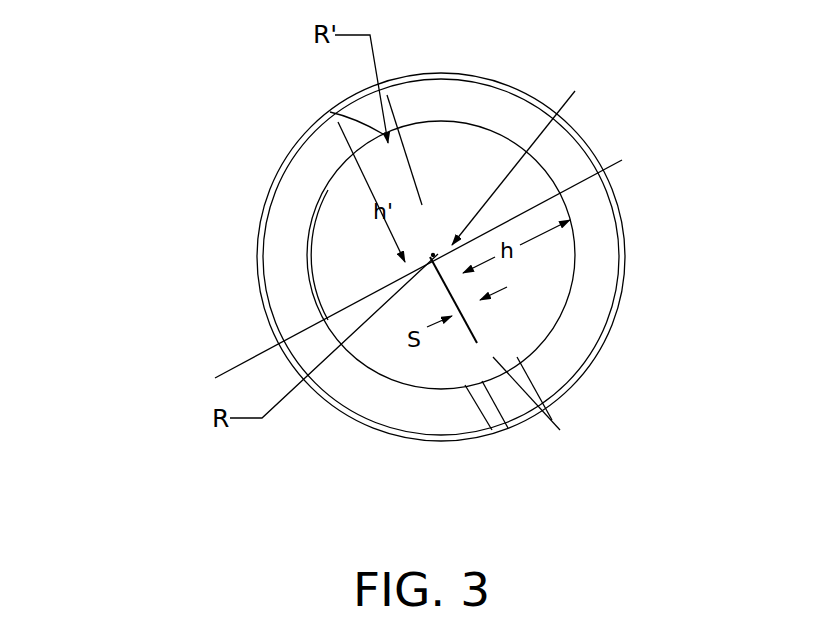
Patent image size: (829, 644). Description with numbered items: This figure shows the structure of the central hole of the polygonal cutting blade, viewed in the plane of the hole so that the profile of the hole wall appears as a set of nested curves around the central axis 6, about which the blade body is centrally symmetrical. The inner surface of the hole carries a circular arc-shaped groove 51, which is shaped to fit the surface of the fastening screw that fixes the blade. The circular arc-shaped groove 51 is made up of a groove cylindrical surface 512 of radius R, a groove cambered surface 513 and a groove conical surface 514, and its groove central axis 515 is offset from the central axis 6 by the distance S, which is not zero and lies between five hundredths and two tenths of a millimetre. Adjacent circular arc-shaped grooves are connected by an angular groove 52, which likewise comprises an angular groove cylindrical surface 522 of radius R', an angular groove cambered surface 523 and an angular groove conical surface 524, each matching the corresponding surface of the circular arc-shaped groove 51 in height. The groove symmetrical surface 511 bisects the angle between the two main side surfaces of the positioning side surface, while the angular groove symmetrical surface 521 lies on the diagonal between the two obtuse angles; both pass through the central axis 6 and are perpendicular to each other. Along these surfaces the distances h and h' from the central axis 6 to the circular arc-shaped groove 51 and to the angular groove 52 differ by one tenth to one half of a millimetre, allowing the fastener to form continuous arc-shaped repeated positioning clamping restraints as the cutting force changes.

The central axis 6 is at (575, 91).
The circular arc-shaped groove 51 is at (582, 250).
The groove symmetrical surface 511 is at (238, 360).
The groove cylindrical surface 512 is at (304, 214).
The groove cambered surface 513 is at (283, 233).
The groove conical surface 514 is at (255, 249).
The groove central axis 515 is at (432, 252).
The angular groove 52 is at (347, 112).
The angular groove symmetrical surface 521 is at (480, 352).
The angular groove cylindrical surface 522 is at (494, 392).
The angular groove cambered surface 523 is at (523, 397).
The angular groove conical surface 524 is at (553, 410).